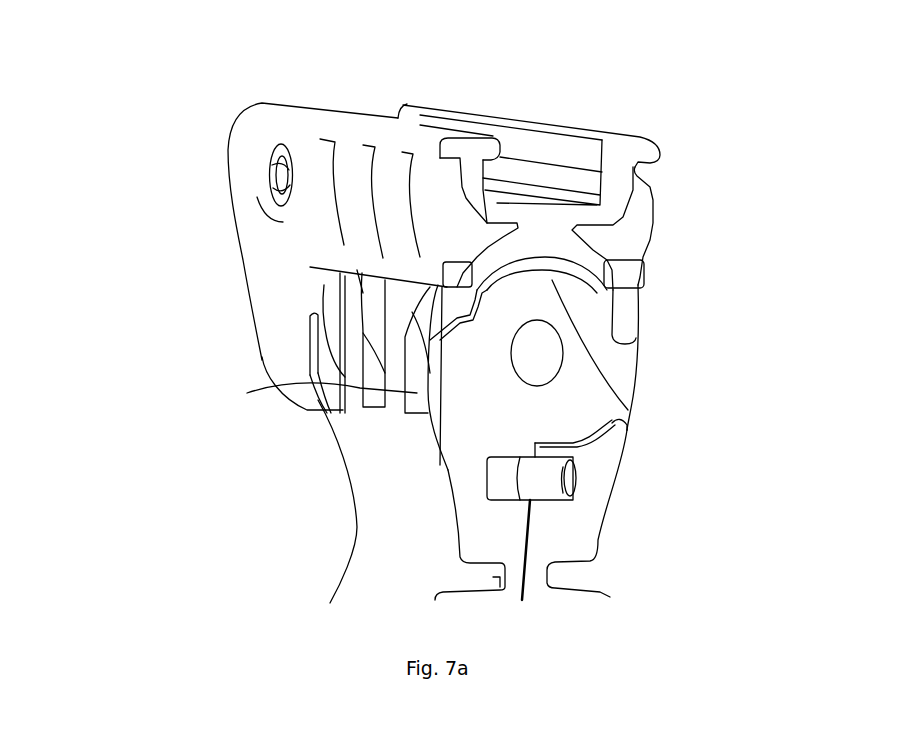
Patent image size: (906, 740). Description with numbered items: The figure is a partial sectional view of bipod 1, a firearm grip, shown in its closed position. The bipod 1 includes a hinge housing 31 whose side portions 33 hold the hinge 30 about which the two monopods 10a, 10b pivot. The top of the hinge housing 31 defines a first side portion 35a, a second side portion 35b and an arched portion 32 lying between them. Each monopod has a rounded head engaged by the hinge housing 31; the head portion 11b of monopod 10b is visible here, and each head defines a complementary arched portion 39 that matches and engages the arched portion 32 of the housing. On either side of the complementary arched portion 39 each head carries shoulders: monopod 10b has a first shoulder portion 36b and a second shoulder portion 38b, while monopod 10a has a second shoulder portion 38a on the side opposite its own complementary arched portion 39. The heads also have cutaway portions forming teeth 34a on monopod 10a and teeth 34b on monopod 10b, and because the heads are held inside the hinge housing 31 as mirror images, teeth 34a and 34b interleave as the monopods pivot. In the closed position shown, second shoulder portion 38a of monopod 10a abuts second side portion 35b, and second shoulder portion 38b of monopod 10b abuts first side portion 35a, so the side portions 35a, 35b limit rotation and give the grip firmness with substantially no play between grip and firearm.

The bipod 1 is at (214, 60).
The monopod 10a is at (570, 527).
The monopod 10b is at (368, 573).
The rounded head portion 11b is at (590, 370).
The hinge 30 is at (535, 355).
The hinge housing 31 is at (263, 260).
The arched portion 32 is at (539, 257).
The side portions 33 is at (283, 308).
The teeth 34a is at (403, 293).
The teeth 34b is at (323, 413).
The first side portion 35a is at (632, 277).
The second side portion 35b is at (455, 285).
The first shoulder portion 36b is at (343, 372).
The second shoulder portion 38a is at (302, 283).
The second shoulder portion 38b is at (640, 343).
The complementary arched portion 39 is at (566, 315).